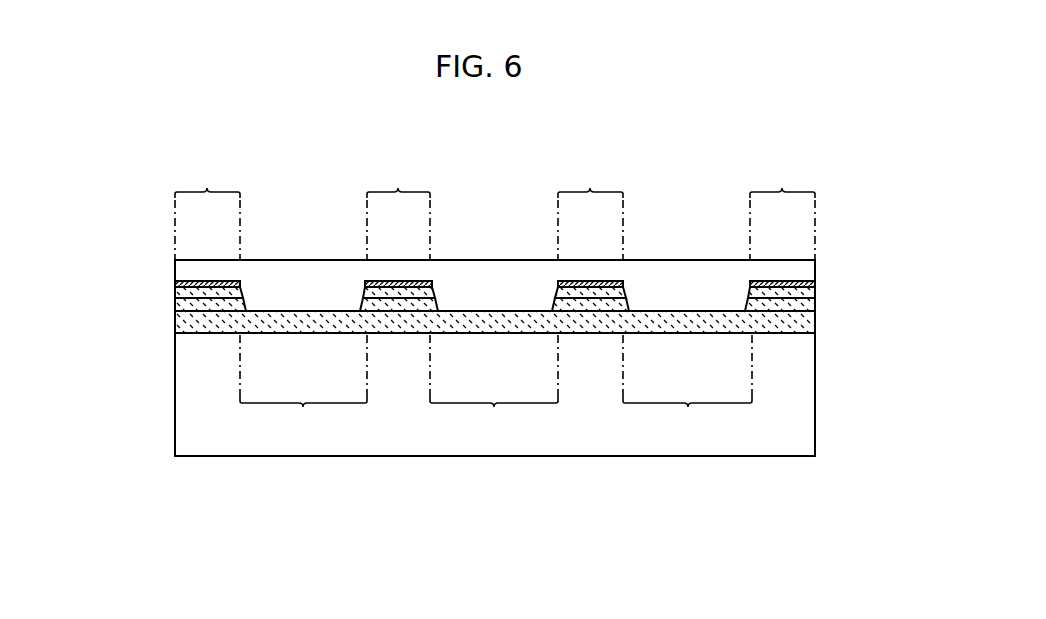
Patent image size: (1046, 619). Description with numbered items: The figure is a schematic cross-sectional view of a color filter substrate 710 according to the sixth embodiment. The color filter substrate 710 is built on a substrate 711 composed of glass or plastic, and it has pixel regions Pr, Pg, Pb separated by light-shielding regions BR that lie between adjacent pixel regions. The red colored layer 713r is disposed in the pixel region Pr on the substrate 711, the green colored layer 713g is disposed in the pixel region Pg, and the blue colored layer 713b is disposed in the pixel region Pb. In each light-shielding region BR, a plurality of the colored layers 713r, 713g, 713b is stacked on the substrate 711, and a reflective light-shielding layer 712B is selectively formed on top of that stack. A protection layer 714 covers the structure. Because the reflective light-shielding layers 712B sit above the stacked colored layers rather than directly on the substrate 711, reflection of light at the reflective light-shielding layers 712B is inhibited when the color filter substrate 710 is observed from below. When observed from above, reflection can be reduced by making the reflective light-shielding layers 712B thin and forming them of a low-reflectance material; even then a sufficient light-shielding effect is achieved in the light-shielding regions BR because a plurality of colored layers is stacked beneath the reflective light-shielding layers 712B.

The color filter substrate 710 is at (525, 138).
The substrate 711 is at (378, 448).
The reflective light-shielding layer 712B is at (207, 282).
The red colored layer 713r is at (308, 313).
The green colored layer 713g is at (180, 296).
The blue colored layer 713b is at (180, 307).
The protection layer 714 is at (807, 267).
The light-shielding region BR is at (495, 206).
The red pixel region Pr is at (303, 388).
The green pixel region Pg is at (494, 388).
The blue pixel region Pb is at (687, 387).